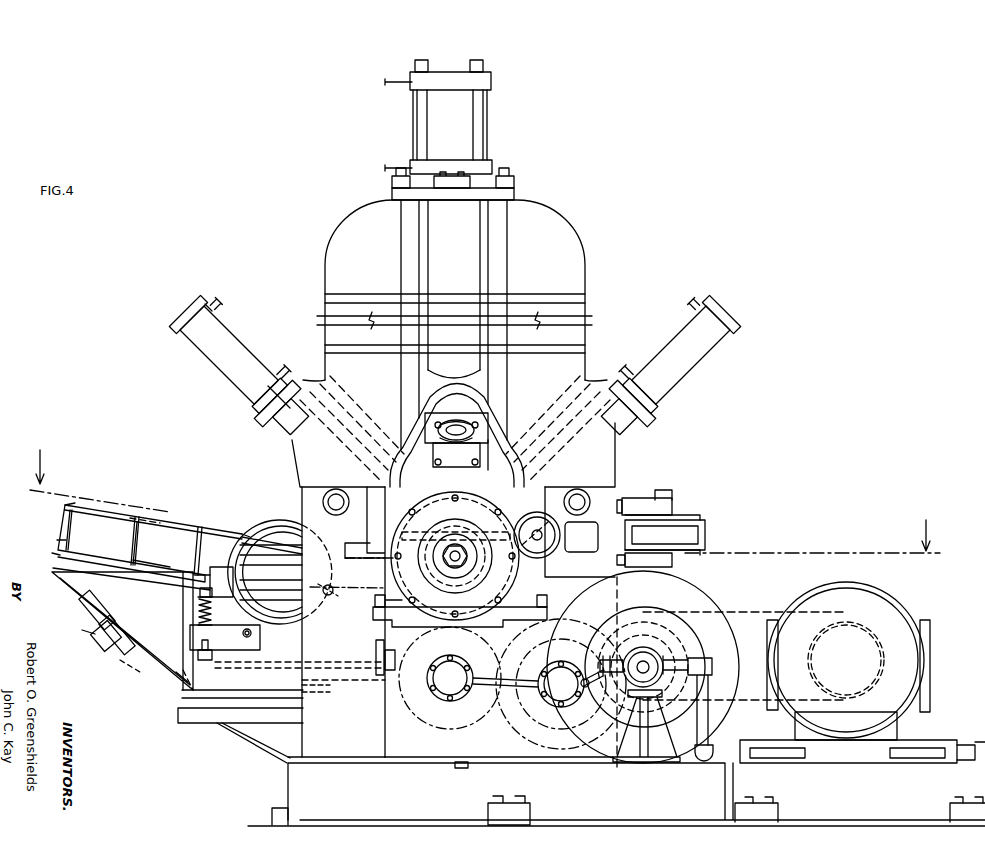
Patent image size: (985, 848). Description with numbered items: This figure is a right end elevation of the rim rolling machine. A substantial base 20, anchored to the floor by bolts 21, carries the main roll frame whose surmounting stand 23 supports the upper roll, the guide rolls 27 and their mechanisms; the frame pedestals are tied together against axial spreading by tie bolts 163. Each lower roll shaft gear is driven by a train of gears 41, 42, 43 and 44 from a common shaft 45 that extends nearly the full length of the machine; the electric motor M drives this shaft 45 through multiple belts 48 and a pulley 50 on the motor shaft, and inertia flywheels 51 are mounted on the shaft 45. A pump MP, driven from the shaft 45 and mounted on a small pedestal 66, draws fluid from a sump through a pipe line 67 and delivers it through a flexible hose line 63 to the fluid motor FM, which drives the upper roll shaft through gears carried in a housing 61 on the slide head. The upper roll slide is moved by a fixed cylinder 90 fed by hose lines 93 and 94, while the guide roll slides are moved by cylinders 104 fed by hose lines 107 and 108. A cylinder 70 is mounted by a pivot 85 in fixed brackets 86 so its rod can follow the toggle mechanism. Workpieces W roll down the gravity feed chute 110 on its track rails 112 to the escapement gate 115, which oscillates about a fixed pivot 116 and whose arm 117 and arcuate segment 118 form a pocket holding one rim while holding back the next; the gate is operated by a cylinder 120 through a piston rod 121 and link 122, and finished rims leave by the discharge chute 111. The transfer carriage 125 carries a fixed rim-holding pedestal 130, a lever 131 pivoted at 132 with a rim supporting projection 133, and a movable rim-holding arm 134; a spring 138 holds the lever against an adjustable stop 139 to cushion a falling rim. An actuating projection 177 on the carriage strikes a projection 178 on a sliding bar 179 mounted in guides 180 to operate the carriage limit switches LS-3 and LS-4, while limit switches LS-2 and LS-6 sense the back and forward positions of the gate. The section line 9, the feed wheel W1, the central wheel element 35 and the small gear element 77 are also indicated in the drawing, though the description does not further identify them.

The base 20 is at (460, 810).
The bolts 21 is at (515, 790).
The stand 23 is at (570, 233).
The guide rolls 27 is at (372, 543).
The main drive wheel 35 is at (462, 570).
The gear 41 is at (440, 735).
The gear 42 is at (550, 715).
The gear 43 is at (525, 737).
The gear 44 is at (630, 640).
The common shaft 45 is at (665, 660).
The multiple belts 48 is at (770, 612).
The pulley 50 is at (870, 640).
The inertia flywheels 51 is at (705, 605).
The housing 61 is at (489, 470).
The flexible hose line 63 is at (590, 660).
The pedestal 66 is at (635, 752).
The pipe line 67 is at (712, 735).
The cylinder 70 is at (676, 535).
The gear 77 is at (550, 555).
The pivot 85 is at (675, 488).
The fixed brackets 86 is at (640, 505).
The fixed cylinder 90 is at (470, 127).
The flexible hose line 93 is at (405, 85).
The flexible hose line 94 is at (400, 159).
The cylinder 104 is at (218, 370).
The flexible hose line 107 is at (210, 310).
The flexible hose line 108 is at (283, 370).
The gravity feed chute 110 is at (65, 515).
The gravity discharge chute 111 is at (668, 602).
The track rails 112 is at (58, 553).
The gate 115 is at (160, 513).
The fixed pivot 116 is at (140, 545).
The arm 117 is at (165, 562).
The arcuate segment 118 is at (58, 538).
The cylinder 120 is at (150, 680).
The piston rod 121 is at (120, 612).
The link 122 is at (120, 594).
The carriage 125 is at (238, 700).
The fixed rim-holding pedestal 130 is at (225, 567).
The lever 131 is at (212, 610).
The pivot 132 is at (245, 638).
The rim supporting projection 133 is at (228, 618).
The movable rim-holding arm 134 is at (335, 596).
The spring 138 is at (212, 593).
The adjustable stop 139 is at (216, 650).
The tie bolts 163 is at (325, 502).
The actuating projection 177 is at (190, 690).
The projection 178 is at (369, 665).
The sliding bar 179 is at (380, 662).
The guides 180 is at (392, 650).
The section line 9 is at (485, 501).
The fluid motor FM is at (457, 436).
The workpiece W is at (394, 597).
The feed wheel W1 is at (280, 566).
The electric motor M is at (852, 609).
The pump MP is at (595, 688).
The limit switch LS-2 is at (100, 636).
The limit switch LS-3 is at (324, 685).
The limit switch LS-4 is at (324, 699).
The limit switch LS-6 is at (145, 665).